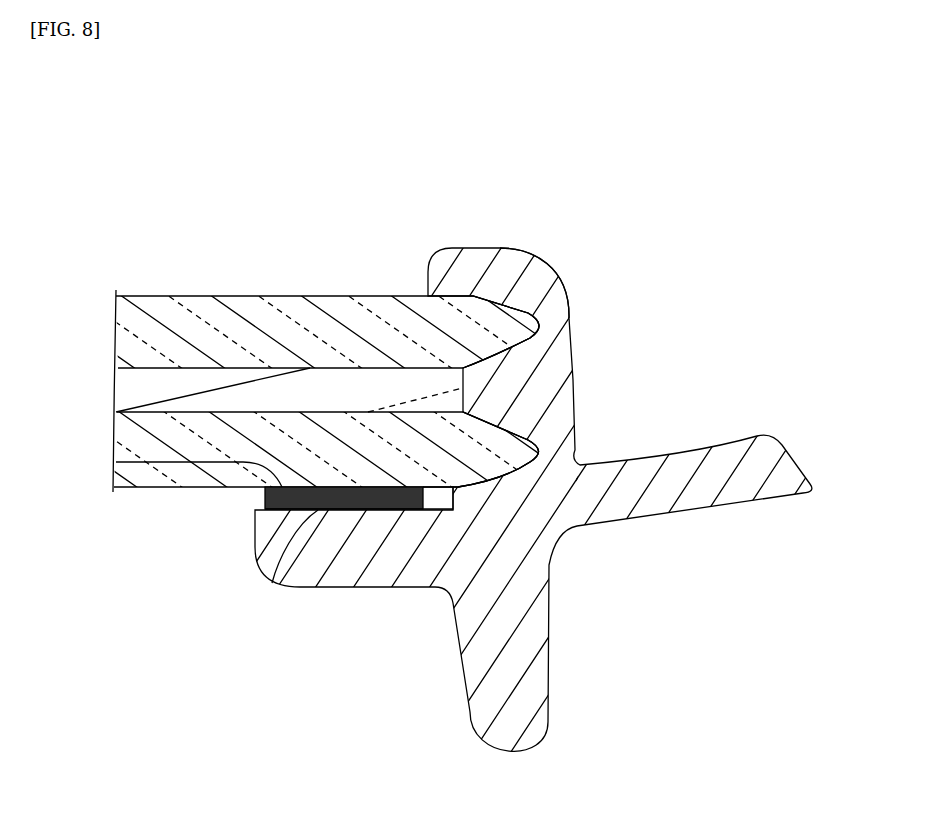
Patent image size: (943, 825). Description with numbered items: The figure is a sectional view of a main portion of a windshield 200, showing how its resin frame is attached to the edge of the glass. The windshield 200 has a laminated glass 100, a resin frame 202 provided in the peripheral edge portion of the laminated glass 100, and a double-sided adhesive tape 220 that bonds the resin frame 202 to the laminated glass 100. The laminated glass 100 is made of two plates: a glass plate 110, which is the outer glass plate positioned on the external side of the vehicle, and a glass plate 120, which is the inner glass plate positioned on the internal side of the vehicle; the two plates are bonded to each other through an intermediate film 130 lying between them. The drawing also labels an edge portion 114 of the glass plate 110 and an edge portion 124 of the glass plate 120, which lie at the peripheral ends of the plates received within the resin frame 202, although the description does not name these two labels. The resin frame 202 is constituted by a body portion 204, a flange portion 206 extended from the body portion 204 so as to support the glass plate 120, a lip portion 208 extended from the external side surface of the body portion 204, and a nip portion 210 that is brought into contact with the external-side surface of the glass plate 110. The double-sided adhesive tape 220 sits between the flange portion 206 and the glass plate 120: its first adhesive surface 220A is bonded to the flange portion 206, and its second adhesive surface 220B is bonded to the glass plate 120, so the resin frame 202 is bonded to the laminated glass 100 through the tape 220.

The laminated glass 100 is at (419, 381).
The glass plate 110 is at (157, 305).
The tip end of first bar 114 is at (540, 328).
The glass plate 120 is at (157, 476).
The tip end of second bar 124 is at (540, 453).
The intermediate film 130 is at (236, 378).
The windshield 200 is at (531, 480).
The resin frame 202 is at (531, 493).
The body portion 204 is at (542, 280).
The flange portion 206 is at (383, 586).
The lip portion 208 is at (787, 457).
The nip portion 210 is at (482, 255).
The double-sided adhesive tape 220 is at (246, 531).
The first adhesive surface 220A is at (272, 583).
The second adhesive surface 220B is at (116, 462).